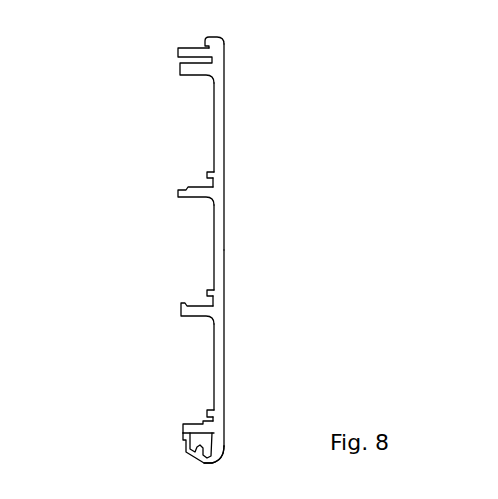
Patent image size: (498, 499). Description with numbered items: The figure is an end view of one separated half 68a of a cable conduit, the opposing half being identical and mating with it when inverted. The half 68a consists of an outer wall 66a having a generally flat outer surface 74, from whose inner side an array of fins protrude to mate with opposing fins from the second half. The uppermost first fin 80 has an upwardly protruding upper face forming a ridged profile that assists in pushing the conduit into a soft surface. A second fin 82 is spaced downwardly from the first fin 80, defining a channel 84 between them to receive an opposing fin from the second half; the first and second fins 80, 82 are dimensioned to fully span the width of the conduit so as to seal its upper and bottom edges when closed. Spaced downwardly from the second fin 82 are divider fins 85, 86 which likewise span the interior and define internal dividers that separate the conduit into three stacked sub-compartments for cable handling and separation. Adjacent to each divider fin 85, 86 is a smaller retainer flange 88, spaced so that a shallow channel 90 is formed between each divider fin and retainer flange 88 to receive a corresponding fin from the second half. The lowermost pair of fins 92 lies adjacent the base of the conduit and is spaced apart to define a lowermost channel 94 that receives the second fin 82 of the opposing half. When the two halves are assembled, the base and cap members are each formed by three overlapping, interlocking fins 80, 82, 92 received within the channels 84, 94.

The lowermost channel 94 is at (188, 54).
The lowermost pair of fins 92 is at (173, 73).
The outer surface 74 is at (225, 247).
The retainer flange 88 is at (208, 174).
The shallow channel 90 is at (205, 177).
The divider fin 86 is at (180, 193).
The divider fin 85 is at (172, 311).
The second fin 82 is at (182, 427).
The channel 84 is at (183, 438).
The first fin 80 is at (216, 458).
The first half 68a is at (233, 286).
The opposing wall 66a is at (225, 370).